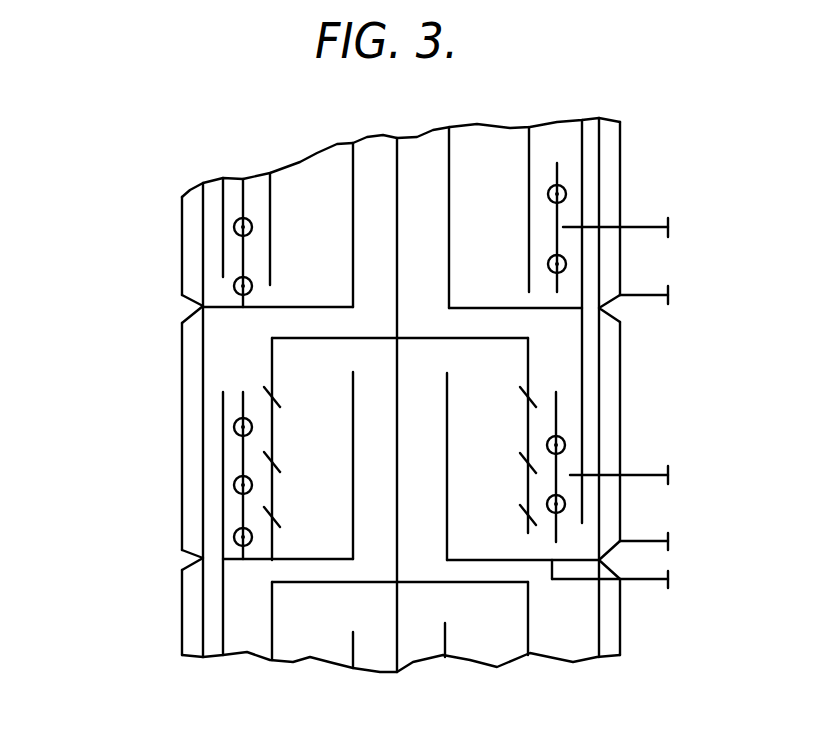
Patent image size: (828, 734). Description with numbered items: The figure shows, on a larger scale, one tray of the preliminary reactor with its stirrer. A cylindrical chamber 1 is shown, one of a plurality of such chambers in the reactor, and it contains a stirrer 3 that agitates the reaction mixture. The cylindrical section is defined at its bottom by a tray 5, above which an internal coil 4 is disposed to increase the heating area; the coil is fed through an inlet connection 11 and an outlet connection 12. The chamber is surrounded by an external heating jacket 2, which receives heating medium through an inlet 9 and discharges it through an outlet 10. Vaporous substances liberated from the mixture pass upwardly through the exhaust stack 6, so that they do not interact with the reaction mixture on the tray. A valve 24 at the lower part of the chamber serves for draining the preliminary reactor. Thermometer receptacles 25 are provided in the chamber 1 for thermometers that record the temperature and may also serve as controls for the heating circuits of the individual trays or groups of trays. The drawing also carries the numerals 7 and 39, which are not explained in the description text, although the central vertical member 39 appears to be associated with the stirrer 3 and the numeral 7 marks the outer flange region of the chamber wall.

The cylindrical chamber 1 is at (567, 177).
The external heating jacket 2 is at (607, 258).
The stirrer 3 is at (528, 367).
The internal coil 4 is at (567, 445).
The tray 5 is at (507, 310).
The exhaust stack 6 is at (451, 428).
The side flange 7 is at (213, 226).
The heating jacket inlet 9 is at (668, 535).
The heating jacket outlet 10 is at (182, 327).
The internal coil inlet connection 11 is at (234, 427).
The internal coil outlet connection 12 is at (234, 286).
The valve 24 is at (668, 574).
The thermometer receptacle 25 is at (668, 220).
The center wall 39 is at (398, 158).